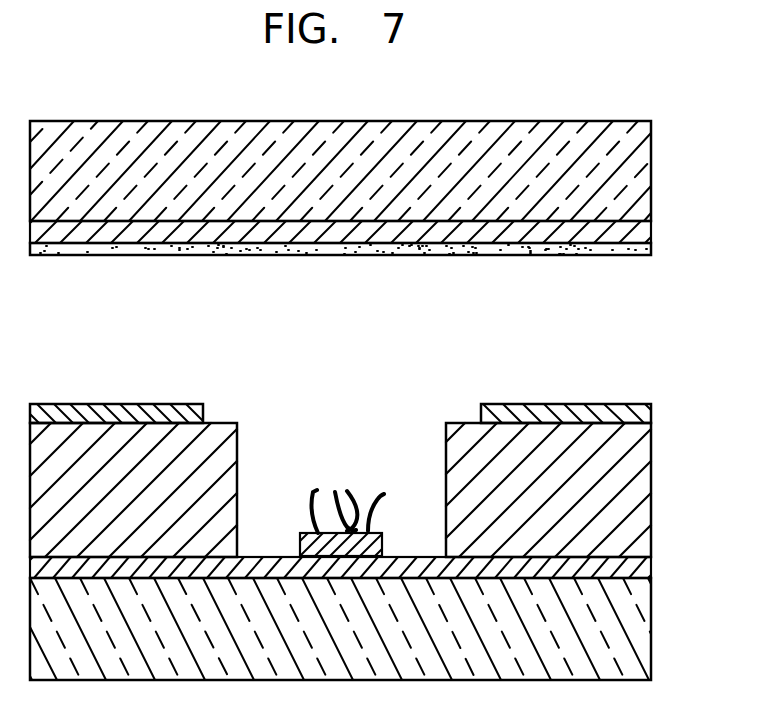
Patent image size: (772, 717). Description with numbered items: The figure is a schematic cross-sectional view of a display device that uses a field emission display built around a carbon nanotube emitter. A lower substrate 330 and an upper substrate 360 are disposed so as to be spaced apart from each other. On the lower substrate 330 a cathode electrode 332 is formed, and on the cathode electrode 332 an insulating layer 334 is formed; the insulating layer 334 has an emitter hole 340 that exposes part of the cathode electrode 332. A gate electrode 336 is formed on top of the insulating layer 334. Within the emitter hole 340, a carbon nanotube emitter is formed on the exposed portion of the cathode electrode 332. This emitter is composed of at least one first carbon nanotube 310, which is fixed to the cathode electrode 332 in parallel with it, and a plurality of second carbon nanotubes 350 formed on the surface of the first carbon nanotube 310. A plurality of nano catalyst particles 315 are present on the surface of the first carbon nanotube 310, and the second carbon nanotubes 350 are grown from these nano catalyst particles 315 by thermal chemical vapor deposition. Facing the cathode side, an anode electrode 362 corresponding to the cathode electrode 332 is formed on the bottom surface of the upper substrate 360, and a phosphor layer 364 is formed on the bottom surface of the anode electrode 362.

The upper substrate 360 is at (636, 145).
The anode electrode 362 is at (639, 228).
The phosphor layer 364 is at (638, 250).
The lower substrate 330 is at (639, 636).
The cathode electrode 332 is at (639, 573).
The insulating layer 334 is at (641, 503).
The gate electrode 336 is at (639, 412).
The emitter hole 340 is at (357, 438).
The first carbon nanotube 310 is at (345, 495).
The nano catalyst particles 315 is at (377, 531).
The second carbon nanotubes 350 is at (381, 492).